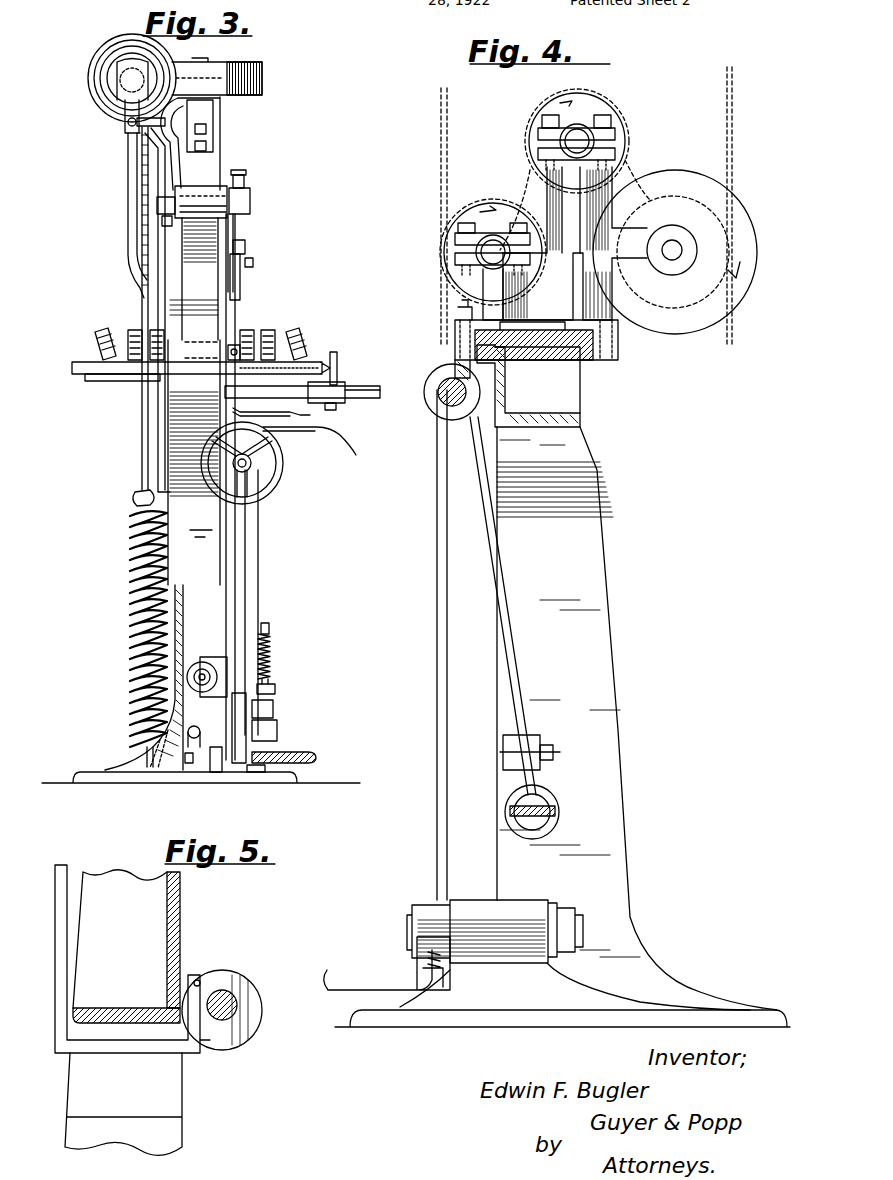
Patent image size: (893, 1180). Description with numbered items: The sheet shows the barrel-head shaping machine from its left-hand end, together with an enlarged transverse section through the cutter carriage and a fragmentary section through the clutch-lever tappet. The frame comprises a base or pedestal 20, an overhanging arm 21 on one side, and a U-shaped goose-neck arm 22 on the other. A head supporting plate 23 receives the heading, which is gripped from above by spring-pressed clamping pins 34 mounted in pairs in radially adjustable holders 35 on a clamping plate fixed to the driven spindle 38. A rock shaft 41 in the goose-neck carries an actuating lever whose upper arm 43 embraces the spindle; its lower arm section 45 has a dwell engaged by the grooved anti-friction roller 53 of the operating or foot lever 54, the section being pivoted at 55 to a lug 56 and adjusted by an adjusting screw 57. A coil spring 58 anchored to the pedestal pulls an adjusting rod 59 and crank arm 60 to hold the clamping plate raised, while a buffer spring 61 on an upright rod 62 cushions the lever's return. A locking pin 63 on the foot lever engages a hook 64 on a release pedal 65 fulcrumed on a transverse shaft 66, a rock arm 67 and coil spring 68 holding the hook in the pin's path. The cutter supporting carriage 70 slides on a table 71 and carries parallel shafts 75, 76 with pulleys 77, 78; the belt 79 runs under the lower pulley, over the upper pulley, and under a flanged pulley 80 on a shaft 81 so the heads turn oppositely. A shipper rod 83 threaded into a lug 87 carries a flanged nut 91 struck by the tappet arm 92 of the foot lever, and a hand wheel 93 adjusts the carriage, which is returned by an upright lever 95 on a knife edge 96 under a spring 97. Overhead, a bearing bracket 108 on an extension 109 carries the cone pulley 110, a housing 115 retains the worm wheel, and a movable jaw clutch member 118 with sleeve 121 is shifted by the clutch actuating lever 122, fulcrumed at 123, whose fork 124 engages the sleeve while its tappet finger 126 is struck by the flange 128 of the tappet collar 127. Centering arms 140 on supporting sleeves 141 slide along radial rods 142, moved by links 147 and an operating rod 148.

In FIG. 3, the base or pedestal 20 is at (175, 617).
In FIG. 4, the base or pedestal 20 is at (562, 727).
In FIG. 4, the overhanging arm 21 is at (505, 392).
In FIG. 3, the goose-neck arm 22 is at (194, 401).
In FIG. 5, the goose-neck arm 22 is at (175, 926).
In FIG. 3, the head supporting plate 23 is at (118, 381).
In FIG. 3, the clamping pins 34 is at (98, 345).
In FIG. 3, the holder 35 is at (300, 328).
In FIG. 3, the driven spindle 38 is at (200, 62).
In FIG. 3, the rock shaft 41 is at (250, 200).
In FIG. 3, the upper arm 43 is at (238, 232).
In FIG. 3, the lower arm section 45 is at (237, 543).
In FIG. 3, the anti-friction roller 53 is at (273, 710).
In FIG. 3, the operating or foot lever 54 is at (300, 752).
In FIG. 4, the operating or foot lever 54 is at (366, 975).
In FIG. 3, the pivot 55 is at (253, 262).
In FIG. 3, the lug 56 is at (240, 268).
In FIG. 3, the adjusting screw 57 is at (222, 364).
In FIG. 3, the coil spring 58 is at (130, 678).
In FIG. 3, the adjusting rod 59 is at (142, 222).
In FIG. 3, the crank arm 60 is at (146, 152).
In FIG. 3, the buffer spring 61 is at (270, 645).
In FIG. 3, the upright rod 62 is at (268, 688).
In FIG. 3, the locking pin 63 is at (237, 760).
In FIG. 3, the hook 64 is at (277, 731).
In FIG. 3, the release pedal 65 is at (275, 689).
In FIG. 3, the transverse shaft 66 is at (258, 772).
In FIG. 3, the rock arm 67 is at (195, 767).
In FIG. 3, the coil spring 68 is at (200, 720).
In FIG. 4, the cutter supporting carriage 70 is at (575, 243).
In FIG. 4, the table 71 is at (600, 344).
In FIG. 4, the upper cutter shaft 75 is at (582, 140).
In FIG. 4, the lower cutter shaft 76 is at (490, 256).
In FIG. 4, the upper pulley 77 is at (592, 106).
In FIG. 4, the lower pulley 78 is at (450, 243).
In FIG. 4, the belt 79 is at (440, 172).
In FIG. 4, the flanged pulley 80 is at (675, 252).
In FIG. 4, the shaft 81 is at (674, 248).
In FIG. 4, the shipper rod 83 is at (440, 400).
In FIG. 5, the shipper rod 83 is at (232, 1012).
In FIG. 4, the lug 87 is at (440, 388).
In FIG. 4, the flanged nut 91 is at (448, 366).
In FIG. 3, the tappet arm 92 is at (259, 573).
In FIG. 4, the tappet arm 92 is at (436, 560).
In FIG. 3, the hand wheel 93 is at (275, 478).
In FIG. 4, the upright lever 95 is at (500, 564).
In FIG. 4, the knife edge 96 is at (553, 745).
In FIG. 3, the spring 97 is at (192, 668).
In FIG. 4, the spring 97 is at (559, 805).
In FIG. 3, the bearing bracket 108 is at (213, 112).
In FIG. 3, the extension 109 is at (207, 170).
In FIG. 3, the cone pulley 110 is at (100, 96).
In FIG. 3, the housing 115 is at (262, 78).
In FIG. 3, the movable jaw clutch member 118 is at (128, 62).
In FIG. 3, the clutch sleeve 121 is at (140, 78).
In FIG. 3, the clutch actuating lever 122 is at (130, 251).
In FIG. 5, the clutch actuating lever 122 is at (58, 968).
In FIG. 3, the fulcrum 123 is at (145, 380).
In FIG. 3, the fork 124 is at (118, 71).
In FIG. 3, the tappet finger 126 is at (242, 452).
In FIG. 5, the tappet finger 126 is at (205, 982).
In FIG. 5, the tappet collar 127 is at (236, 998).
In FIG. 5, the flange 128 is at (222, 1040).
In FIG. 3, the centering arms 140 is at (338, 360).
In FIG. 3, the supporting sleeves 141 is at (320, 386).
In FIG. 3, the radial rods 142 is at (352, 400).
In FIG. 3, the links 147 is at (271, 414).
In FIG. 3, the operating rod 148 is at (325, 450).